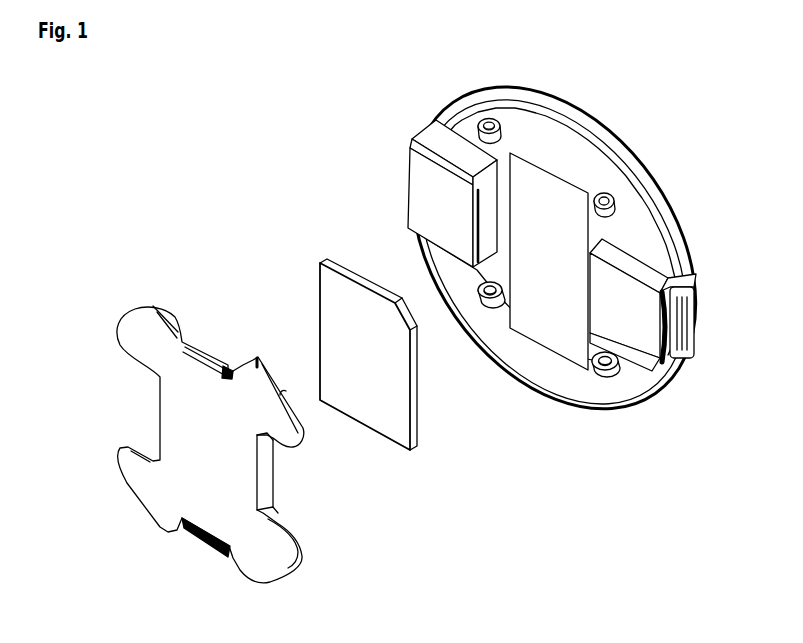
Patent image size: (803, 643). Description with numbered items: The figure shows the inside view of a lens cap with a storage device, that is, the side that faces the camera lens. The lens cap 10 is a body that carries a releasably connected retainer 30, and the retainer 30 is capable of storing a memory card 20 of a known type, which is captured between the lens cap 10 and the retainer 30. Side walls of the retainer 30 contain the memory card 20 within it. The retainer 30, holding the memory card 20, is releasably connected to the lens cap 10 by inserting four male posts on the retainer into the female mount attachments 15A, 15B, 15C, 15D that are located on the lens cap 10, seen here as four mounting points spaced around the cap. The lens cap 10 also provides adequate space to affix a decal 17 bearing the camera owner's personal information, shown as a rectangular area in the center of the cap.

The lens cap 10 is at (540, 95).
The female mount attachment 15A is at (478, 127).
The female mount attachment 15B is at (614, 204).
The female mount attachment 15C is at (497, 305).
The female mount attachment 15D is at (619, 369).
The decal 17 is at (556, 187).
The memory card 20 is at (400, 434).
The retainer 30 is at (268, 558).